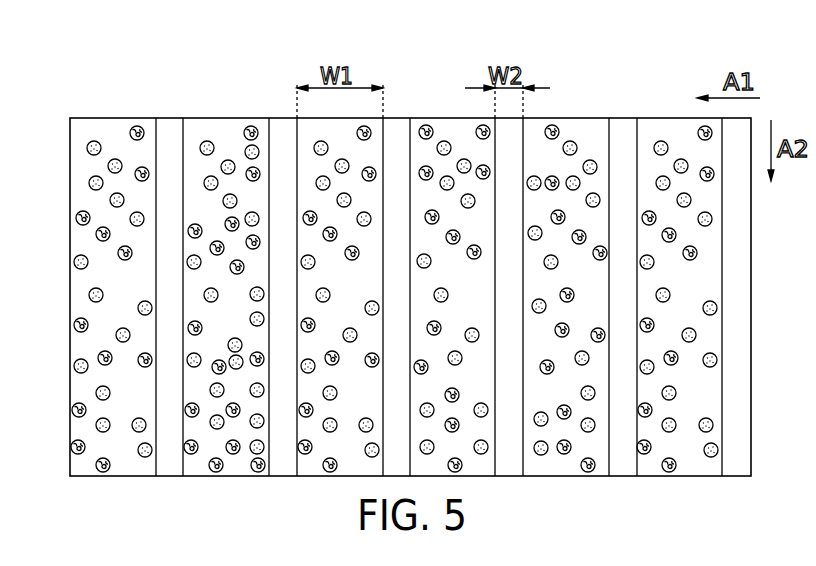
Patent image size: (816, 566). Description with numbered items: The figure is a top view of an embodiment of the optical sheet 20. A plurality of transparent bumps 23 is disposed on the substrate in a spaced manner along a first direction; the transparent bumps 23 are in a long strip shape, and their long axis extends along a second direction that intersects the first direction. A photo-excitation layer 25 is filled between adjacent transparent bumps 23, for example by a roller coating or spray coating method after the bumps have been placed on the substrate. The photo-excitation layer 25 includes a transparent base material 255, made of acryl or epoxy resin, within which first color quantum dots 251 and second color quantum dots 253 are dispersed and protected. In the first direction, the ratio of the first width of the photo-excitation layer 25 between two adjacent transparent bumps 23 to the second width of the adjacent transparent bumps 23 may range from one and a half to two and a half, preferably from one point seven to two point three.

The optical sheet 20 is at (53, 100).
The transparent bumps 23 is at (170, 142).
The photo-excitation layer 25 is at (227, 147).
The first color quantum dots 251 is at (665, 144).
The second color quantum dots 253 is at (560, 131).
The transparent base material 255 is at (645, 163).